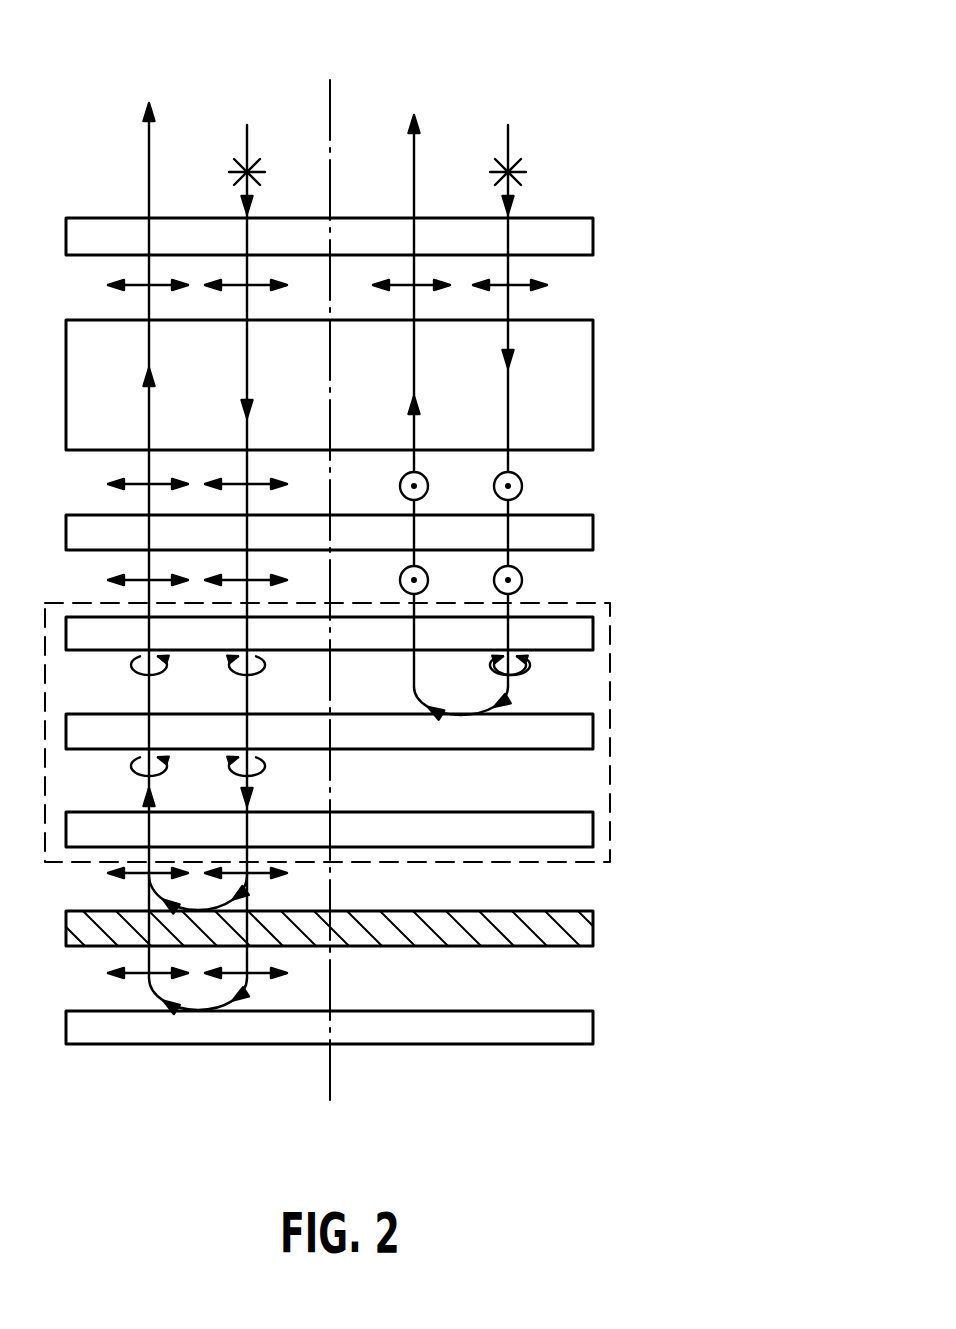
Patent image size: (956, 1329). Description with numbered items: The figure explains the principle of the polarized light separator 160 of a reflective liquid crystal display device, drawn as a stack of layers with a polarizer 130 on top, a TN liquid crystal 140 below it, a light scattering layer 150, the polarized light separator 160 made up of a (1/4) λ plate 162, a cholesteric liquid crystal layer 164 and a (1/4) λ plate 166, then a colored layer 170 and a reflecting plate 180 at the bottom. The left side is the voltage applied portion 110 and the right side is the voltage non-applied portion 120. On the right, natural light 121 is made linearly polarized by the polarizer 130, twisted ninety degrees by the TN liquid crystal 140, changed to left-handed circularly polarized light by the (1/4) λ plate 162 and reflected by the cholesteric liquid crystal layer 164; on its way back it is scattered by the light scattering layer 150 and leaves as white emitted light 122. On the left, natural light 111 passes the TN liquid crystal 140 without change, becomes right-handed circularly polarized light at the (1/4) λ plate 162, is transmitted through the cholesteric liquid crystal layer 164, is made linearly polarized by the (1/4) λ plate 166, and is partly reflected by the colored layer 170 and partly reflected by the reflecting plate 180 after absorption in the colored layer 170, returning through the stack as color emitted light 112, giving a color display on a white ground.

The voltage applied portion 110 is at (200, 104).
The natural light 111 is at (247, 145).
The color emitted light 112 is at (149, 151).
The voltage non-applied portion 120 is at (467, 104).
The natural light 121 is at (508, 145).
The white emitted light 122 is at (414, 152).
The polarizer 130 is at (578, 249).
The TN liquid crystal 140 is at (573, 397).
The light scattering layer 150 is at (580, 544).
The polarized light separator 160 is at (610, 689).
The (1/4) λ plate 162 is at (587, 643).
The cholesteric liquid crystal layer 164 is at (587, 743).
The (1/4) λ plate 166 is at (580, 837).
The colored layer 170 is at (582, 937).
The reflecting plate 180 is at (582, 1037).